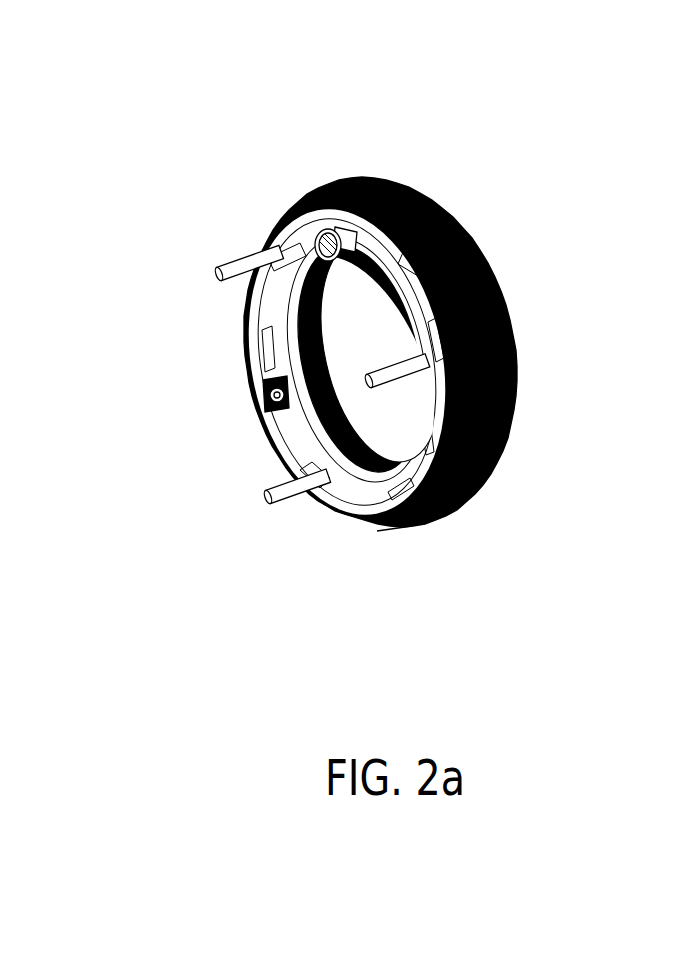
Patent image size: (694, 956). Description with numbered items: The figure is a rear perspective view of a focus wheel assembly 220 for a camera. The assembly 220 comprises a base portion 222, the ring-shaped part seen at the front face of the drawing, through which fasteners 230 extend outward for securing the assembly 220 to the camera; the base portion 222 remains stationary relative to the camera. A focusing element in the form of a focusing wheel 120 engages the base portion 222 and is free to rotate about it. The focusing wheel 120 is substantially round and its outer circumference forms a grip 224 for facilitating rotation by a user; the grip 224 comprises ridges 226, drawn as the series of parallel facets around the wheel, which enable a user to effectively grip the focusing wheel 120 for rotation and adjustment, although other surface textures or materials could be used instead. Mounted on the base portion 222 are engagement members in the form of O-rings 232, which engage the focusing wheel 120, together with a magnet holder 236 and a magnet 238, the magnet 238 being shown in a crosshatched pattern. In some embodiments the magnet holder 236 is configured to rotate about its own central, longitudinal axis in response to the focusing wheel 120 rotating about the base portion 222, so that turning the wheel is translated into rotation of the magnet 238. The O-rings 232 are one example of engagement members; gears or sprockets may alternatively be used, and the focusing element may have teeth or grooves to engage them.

The focusing wheel 120 is at (458, 265).
The focus wheel assembly 220 is at (377, 301).
The base portion 222 is at (283, 348).
The grip 224 is at (437, 342).
The ridges 226 is at (493, 313).
The fasteners 230 is at (226, 262).
The O-rings 232 is at (267, 393).
The magnet holder 236 is at (344, 232).
The magnet 238 is at (327, 243).